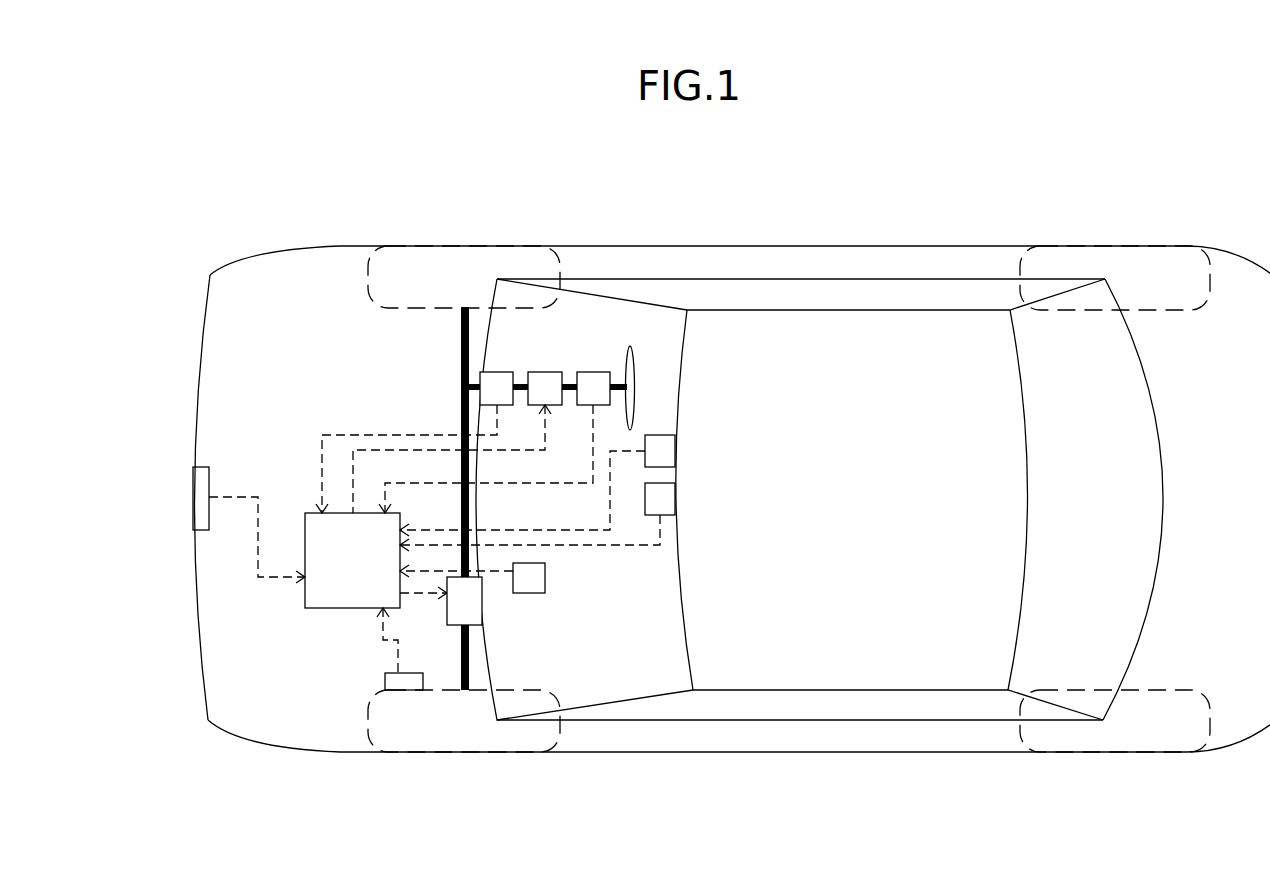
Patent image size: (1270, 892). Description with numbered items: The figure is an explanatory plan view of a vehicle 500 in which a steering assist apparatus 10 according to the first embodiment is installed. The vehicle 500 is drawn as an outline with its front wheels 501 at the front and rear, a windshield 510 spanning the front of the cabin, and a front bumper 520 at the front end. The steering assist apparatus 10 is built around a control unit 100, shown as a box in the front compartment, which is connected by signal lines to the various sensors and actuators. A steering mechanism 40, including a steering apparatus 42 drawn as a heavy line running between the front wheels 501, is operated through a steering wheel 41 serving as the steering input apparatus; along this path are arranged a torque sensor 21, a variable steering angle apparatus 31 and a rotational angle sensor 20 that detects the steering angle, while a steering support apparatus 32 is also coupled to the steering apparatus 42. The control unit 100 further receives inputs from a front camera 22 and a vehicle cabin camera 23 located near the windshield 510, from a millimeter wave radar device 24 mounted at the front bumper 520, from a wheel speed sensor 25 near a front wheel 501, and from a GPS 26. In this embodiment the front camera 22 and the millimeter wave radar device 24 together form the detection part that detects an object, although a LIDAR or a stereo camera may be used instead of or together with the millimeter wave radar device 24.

The vehicle 500 is at (821, 224).
The front wheels 501 is at (490, 244).
The windshield 510 is at (668, 434).
The front bumper 520 is at (200, 347).
The steering assist apparatus 10 is at (252, 670).
The control unit 100 is at (434, 539).
The steering mechanism 40 is at (543, 498).
The steering wheel 41 is at (657, 343).
The steering apparatus 42 is at (461, 380).
The rotational angle sensor 20 is at (593, 388).
The torque sensor 21 is at (496, 388).
The variable steering angle apparatus 31 is at (545, 388).
The steering support apparatus 32 is at (464, 601).
The front camera 22 is at (660, 451).
The vehicle cabin camera 23 is at (660, 499).
The millimeter wave radar device 24 is at (204, 467).
The wheel speed sensor 25 is at (385, 673).
The GPS 26 is at (529, 578).